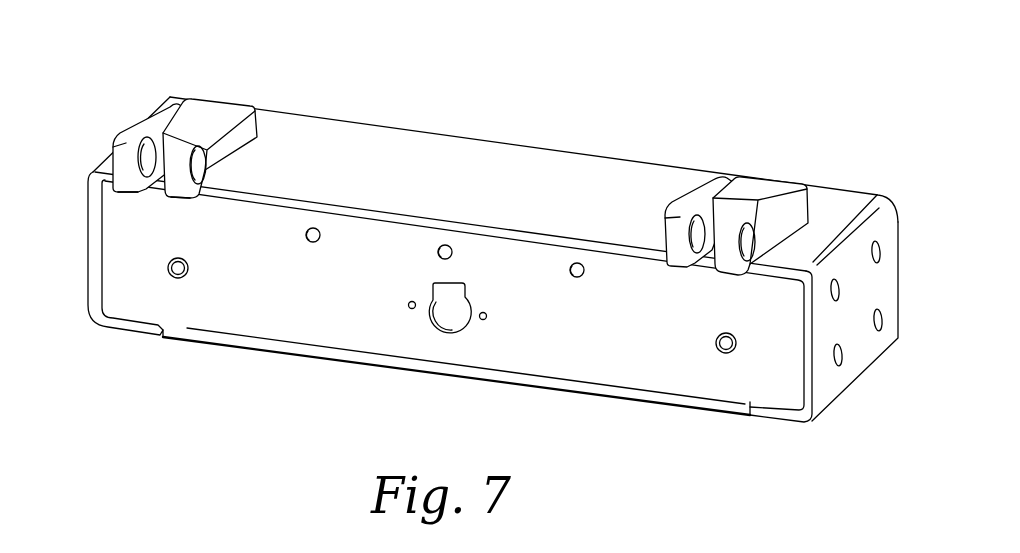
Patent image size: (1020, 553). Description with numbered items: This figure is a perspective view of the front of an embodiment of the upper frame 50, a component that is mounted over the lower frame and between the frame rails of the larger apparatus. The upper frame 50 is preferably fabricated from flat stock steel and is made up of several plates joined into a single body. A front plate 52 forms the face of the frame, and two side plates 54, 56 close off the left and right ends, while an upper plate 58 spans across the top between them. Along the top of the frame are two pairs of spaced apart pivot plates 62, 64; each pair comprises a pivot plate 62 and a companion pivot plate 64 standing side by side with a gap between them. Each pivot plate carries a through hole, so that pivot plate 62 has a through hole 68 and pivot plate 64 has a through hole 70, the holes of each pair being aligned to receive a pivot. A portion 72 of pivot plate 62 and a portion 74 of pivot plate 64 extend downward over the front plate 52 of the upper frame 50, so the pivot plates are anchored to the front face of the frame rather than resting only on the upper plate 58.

The upper frame 50 is at (490, 226).
The front plate 52 is at (307, 320).
The side plate 54 is at (85, 255).
The side plate 56 is at (862, 362).
The upper plate 58 is at (570, 163).
The pivot plate 62 is at (129, 151).
The pivot plate 64 is at (235, 159).
The through hole 68 is at (147, 156).
The through hole 70 is at (210, 165).
The portion of pivot plate 72 is at (137, 197).
The portion of pivot plate 74 is at (184, 200).